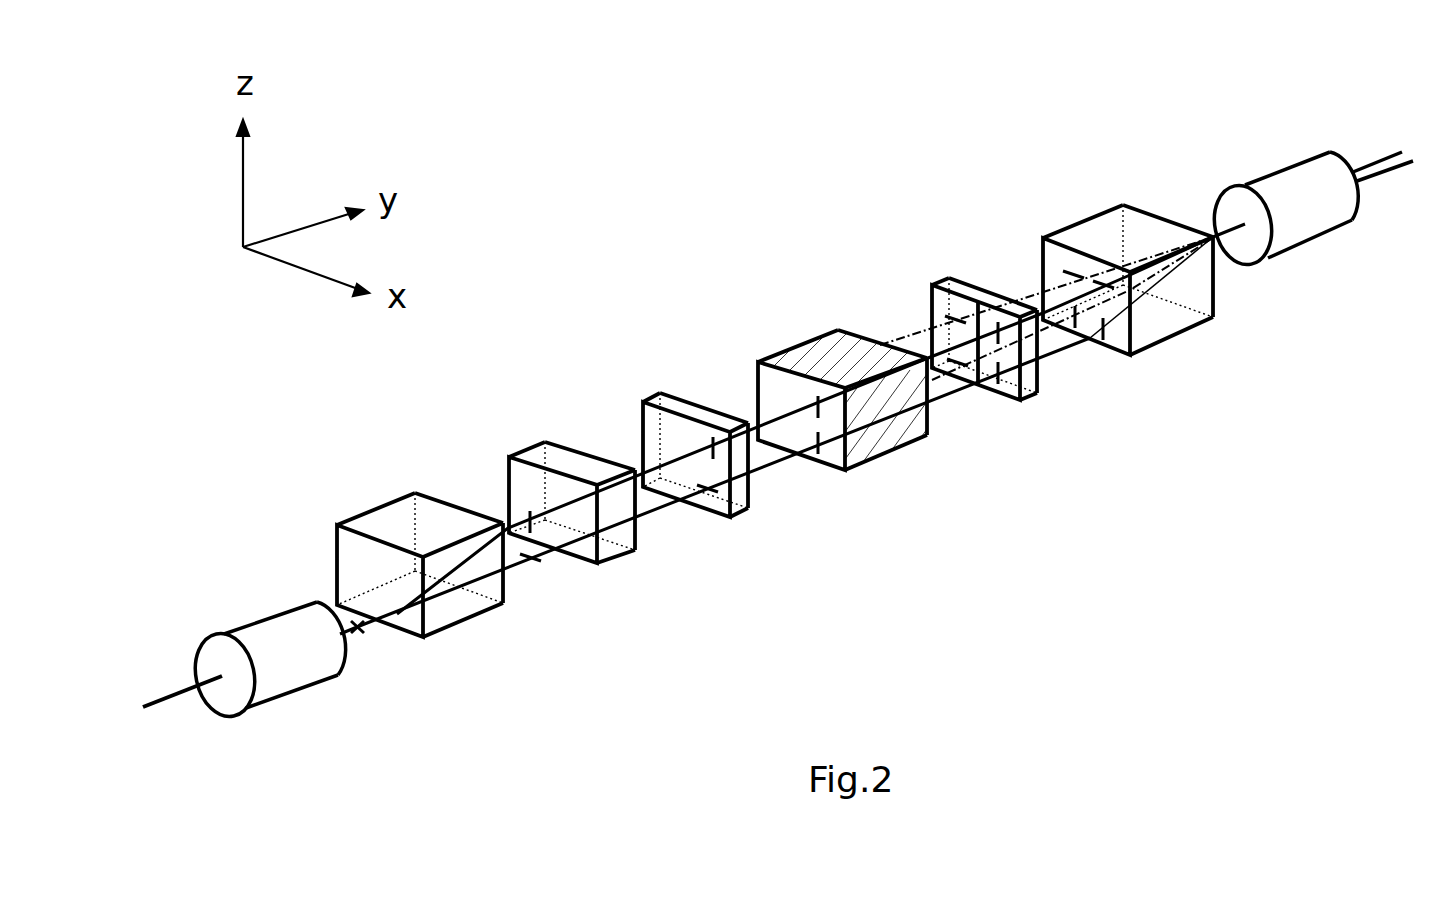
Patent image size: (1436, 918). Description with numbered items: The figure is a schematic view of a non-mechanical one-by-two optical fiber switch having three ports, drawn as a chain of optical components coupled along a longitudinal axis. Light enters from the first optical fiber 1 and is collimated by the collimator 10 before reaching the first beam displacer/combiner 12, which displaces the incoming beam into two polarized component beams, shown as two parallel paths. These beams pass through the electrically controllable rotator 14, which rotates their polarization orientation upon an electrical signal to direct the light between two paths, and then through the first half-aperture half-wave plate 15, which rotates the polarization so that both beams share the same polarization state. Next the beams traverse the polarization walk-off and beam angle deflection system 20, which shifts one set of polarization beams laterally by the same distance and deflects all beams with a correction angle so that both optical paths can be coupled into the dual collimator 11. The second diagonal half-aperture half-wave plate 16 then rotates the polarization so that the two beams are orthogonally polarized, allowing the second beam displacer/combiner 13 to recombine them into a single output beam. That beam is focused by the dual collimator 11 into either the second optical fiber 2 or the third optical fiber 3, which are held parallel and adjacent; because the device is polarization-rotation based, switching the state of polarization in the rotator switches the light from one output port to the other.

The first optical fiber 1 is at (182, 727).
The second optical fiber 2 is at (1377, 125).
The third optical fiber 3 is at (1385, 193).
The collimator 10 is at (267, 620).
The dual collimator 11 is at (1282, 177).
The first beam displacer/combiner 12 is at (420, 535).
The second beam displacer/combiner 13 is at (1128, 247).
The electrically controllable rotator 14 is at (561, 465).
The first half-aperture half-wave plate 15 is at (680, 422).
The second diagonal half-aperture half-wave plate 16 is at (970, 301).
The polarization walk-off and beam angle deflection system 20 is at (875, 375).